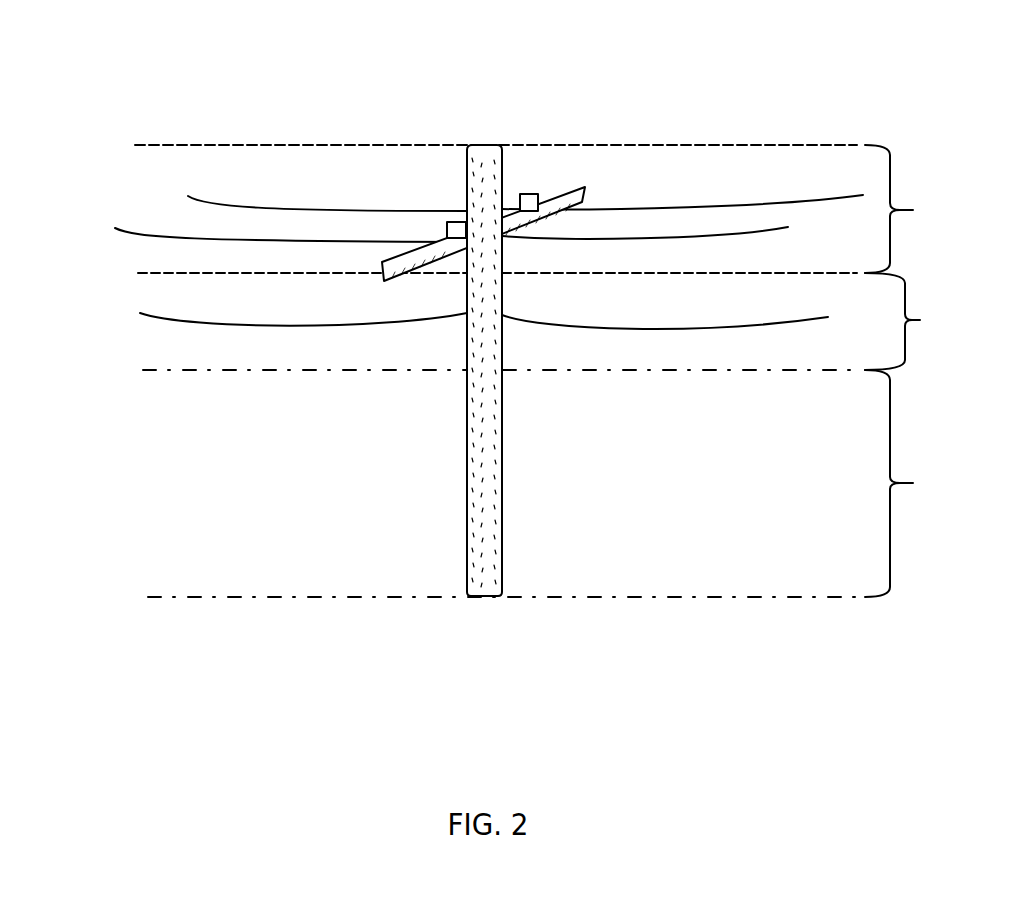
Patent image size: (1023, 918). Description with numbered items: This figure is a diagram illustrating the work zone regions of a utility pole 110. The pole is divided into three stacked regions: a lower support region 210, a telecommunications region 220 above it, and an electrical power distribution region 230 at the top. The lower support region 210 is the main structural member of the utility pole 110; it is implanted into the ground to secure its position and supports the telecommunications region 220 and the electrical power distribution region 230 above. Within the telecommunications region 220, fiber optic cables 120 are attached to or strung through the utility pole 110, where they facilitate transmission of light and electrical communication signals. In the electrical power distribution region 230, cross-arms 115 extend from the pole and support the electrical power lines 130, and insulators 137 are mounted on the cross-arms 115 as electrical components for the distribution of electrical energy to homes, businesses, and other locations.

The utility pole 110 is at (488, 575).
The cross-arms 115 is at (582, 188).
The fiber optic cables 120 is at (287, 327).
The electrical power lines 130 is at (258, 240).
The insulators 137 is at (529, 196).
The lower support region 210 is at (919, 483).
The telecommunications region 220 is at (929, 321).
The electrical power distribution region 230 is at (918, 209).